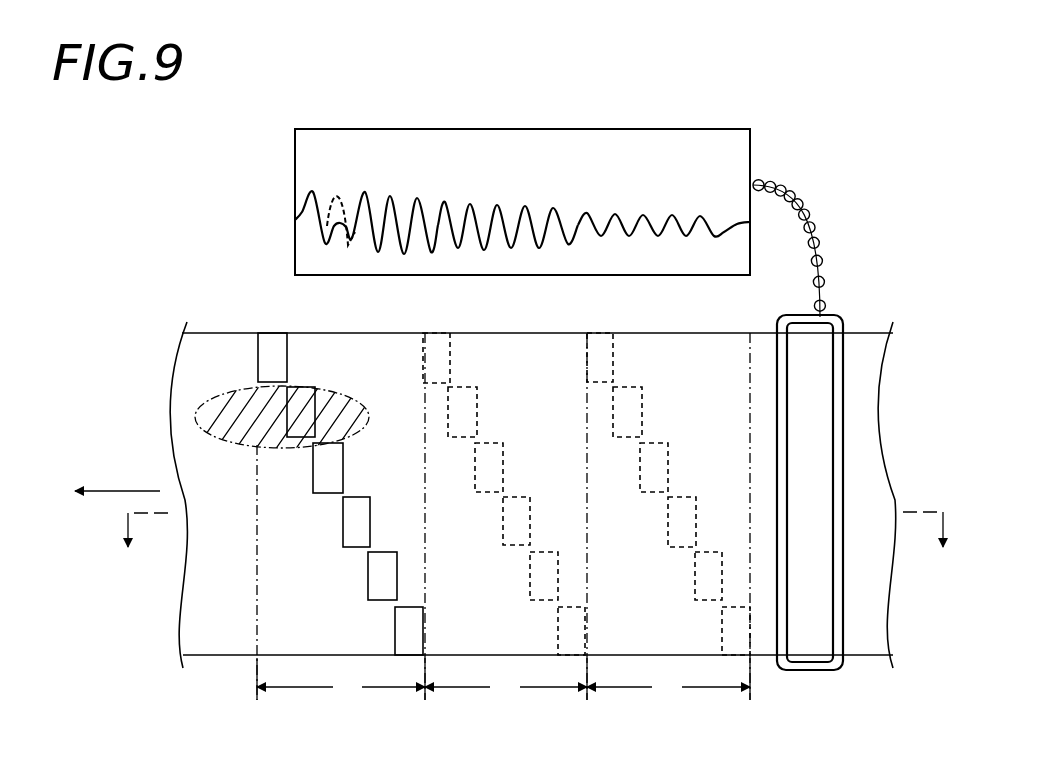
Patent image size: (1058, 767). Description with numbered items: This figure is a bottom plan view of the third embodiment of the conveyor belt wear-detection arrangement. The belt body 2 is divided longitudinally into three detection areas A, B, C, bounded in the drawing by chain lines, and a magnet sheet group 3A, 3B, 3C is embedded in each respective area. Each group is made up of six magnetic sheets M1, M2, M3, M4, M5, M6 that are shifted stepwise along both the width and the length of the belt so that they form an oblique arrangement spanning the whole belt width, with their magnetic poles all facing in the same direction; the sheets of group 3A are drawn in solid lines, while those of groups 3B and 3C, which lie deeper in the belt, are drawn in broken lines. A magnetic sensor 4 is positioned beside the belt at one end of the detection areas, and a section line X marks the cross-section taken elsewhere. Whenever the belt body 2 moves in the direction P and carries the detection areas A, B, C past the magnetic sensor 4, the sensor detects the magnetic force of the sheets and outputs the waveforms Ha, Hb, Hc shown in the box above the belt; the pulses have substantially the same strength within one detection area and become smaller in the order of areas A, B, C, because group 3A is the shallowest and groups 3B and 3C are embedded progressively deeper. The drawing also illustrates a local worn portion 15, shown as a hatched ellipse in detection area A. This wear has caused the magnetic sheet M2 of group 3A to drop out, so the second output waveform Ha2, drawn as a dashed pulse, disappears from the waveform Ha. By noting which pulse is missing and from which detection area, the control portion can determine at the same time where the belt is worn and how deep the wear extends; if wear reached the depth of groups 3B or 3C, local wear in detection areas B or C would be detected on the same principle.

The belt body 2 is at (239, 328).
The local worn portion 15 is at (213, 400).
The magnetic sensor 4 is at (845, 320).
The magnet sheet group 3A is at (327, 507).
The magnet sheet group 3B is at (490, 512).
The magnet sheet group 3C is at (650, 513).
The magnetic sheet M1 is at (287, 357).
The magnetic sheet M2 is at (318, 392).
The magnetic sheet M3 is at (343, 472).
The magnetic sheet M4 is at (390, 512).
The magnetic sheet M5 is at (368, 578).
The magnetic sheet M6 is at (395, 633).
The moving direction P is at (130, 490).
The section line X is at (534, 548).
The detection area A is at (341, 682).
The detection area B is at (506, 682).
The detection area C is at (668, 682).
The output waveform Ha is at (366, 193).
The second output waveform Ha2 is at (340, 201).
The output waveform Hb is at (508, 191).
The output waveform Hc is at (664, 185).